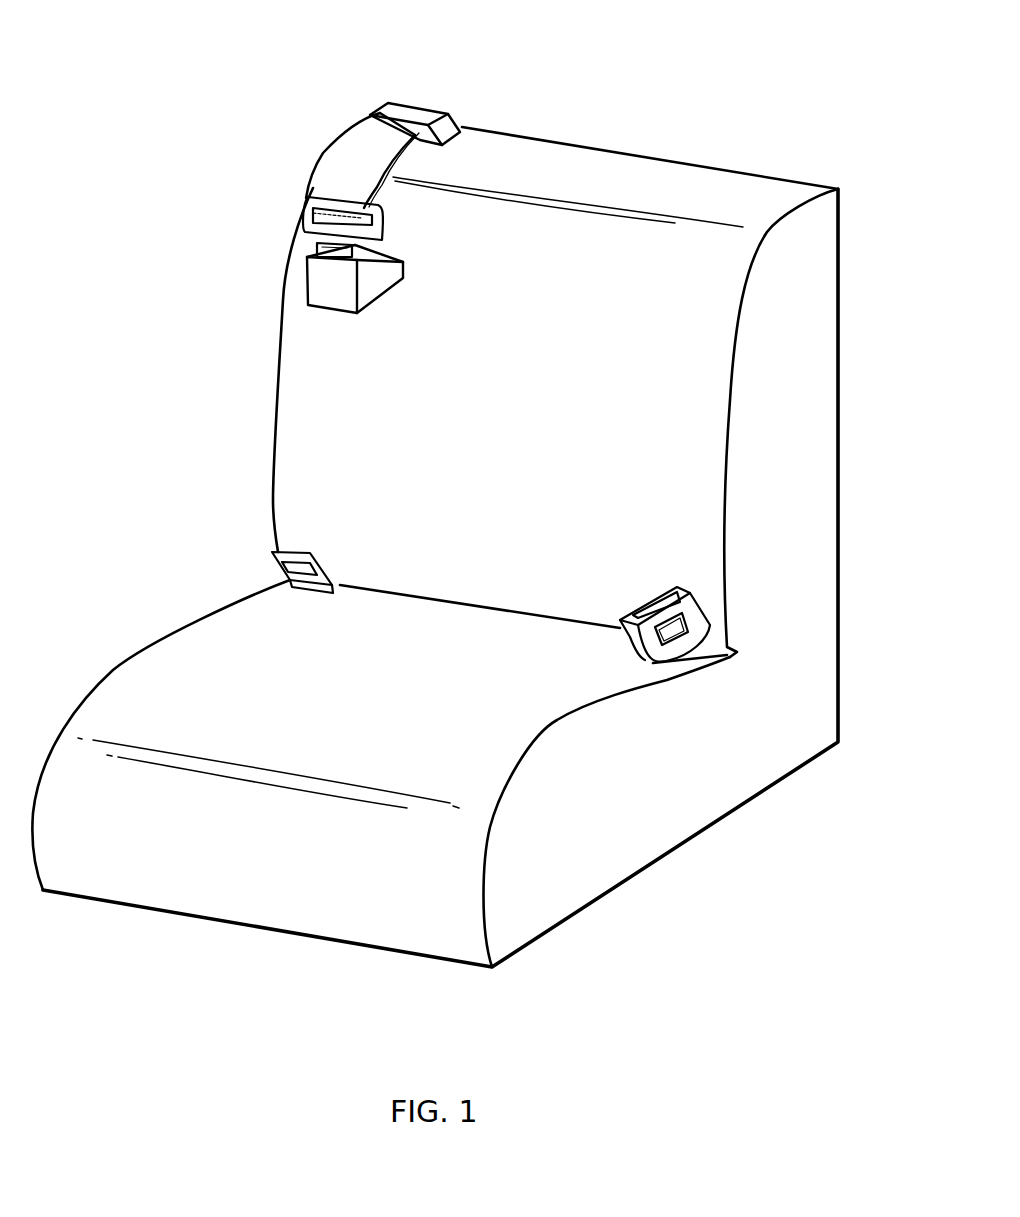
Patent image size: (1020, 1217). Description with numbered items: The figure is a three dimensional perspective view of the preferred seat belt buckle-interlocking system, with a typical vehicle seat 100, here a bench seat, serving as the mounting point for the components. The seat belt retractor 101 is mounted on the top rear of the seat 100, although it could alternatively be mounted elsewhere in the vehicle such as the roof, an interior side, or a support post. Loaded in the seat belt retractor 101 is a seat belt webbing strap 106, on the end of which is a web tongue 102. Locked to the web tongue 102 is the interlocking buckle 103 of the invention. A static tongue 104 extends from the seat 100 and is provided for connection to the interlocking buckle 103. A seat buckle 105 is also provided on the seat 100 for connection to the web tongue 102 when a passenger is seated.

The vehicle seat 100 is at (803, 325).
The seat belt retractor 101 is at (410, 110).
The web tongue 102 is at (305, 239).
The interlocking buckle 103 is at (327, 285).
The static tongue 104 is at (270, 553).
The seat buckle 105 is at (697, 612).
The seat belt webbing strap 106 is at (352, 158).